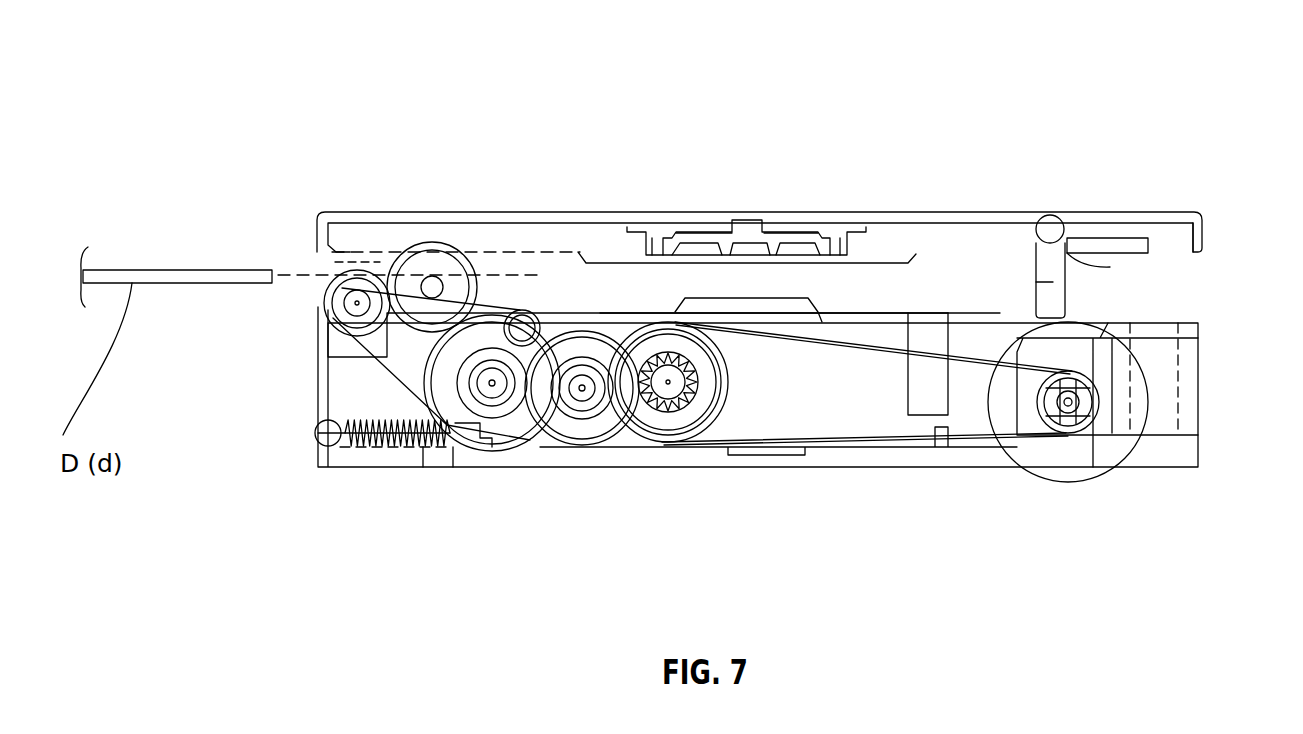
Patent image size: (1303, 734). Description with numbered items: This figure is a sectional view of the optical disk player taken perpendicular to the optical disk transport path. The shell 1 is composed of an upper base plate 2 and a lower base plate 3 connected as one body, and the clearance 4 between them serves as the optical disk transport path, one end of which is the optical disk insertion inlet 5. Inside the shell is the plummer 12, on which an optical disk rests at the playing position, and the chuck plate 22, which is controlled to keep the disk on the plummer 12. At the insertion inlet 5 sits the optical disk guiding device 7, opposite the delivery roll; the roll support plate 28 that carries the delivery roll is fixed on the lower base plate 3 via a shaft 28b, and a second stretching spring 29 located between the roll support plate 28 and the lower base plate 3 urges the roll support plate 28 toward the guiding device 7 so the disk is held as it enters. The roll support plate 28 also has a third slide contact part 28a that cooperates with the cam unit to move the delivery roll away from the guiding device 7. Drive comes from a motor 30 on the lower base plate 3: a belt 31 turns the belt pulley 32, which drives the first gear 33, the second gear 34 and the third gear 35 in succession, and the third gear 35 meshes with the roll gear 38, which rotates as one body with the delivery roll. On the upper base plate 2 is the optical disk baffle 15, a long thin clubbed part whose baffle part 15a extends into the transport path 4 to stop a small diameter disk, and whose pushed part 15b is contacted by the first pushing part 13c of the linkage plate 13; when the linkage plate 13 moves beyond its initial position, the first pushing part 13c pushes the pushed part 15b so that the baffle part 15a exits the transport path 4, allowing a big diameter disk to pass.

The shell 1 is at (712, 97).
The upper base plate 2 is at (1197, 212).
The lower base plate 3 is at (1197, 470).
The clearance 4 is at (928, 280).
The optical disk insertion inlet 5 is at (317, 283).
The optical disk guiding device 7 is at (338, 272).
The plummer 12 is at (815, 297).
The linkage plate 13 is at (1127, 238).
The first pushing part 13c is at (1110, 267).
The optical disk baffle 15 is at (1050, 215).
The baffle part 15a is at (1053, 282).
The pushed part 15b is at (1036, 245).
The chuck plate 22 is at (785, 225).
The roll support plate 28 is at (397, 372).
The third slide contact part 28a is at (592, 360).
The shaft 28b is at (520, 312).
The second stretching spring 29 is at (397, 453).
The motor 30 is at (1128, 448).
The belt 31 is at (892, 435).
The belt pulley 32 is at (665, 450).
The first gear 33 is at (575, 450).
The second gear 34 is at (503, 450).
The third gear 35 is at (437, 243).
The roll gear 38 is at (360, 270).